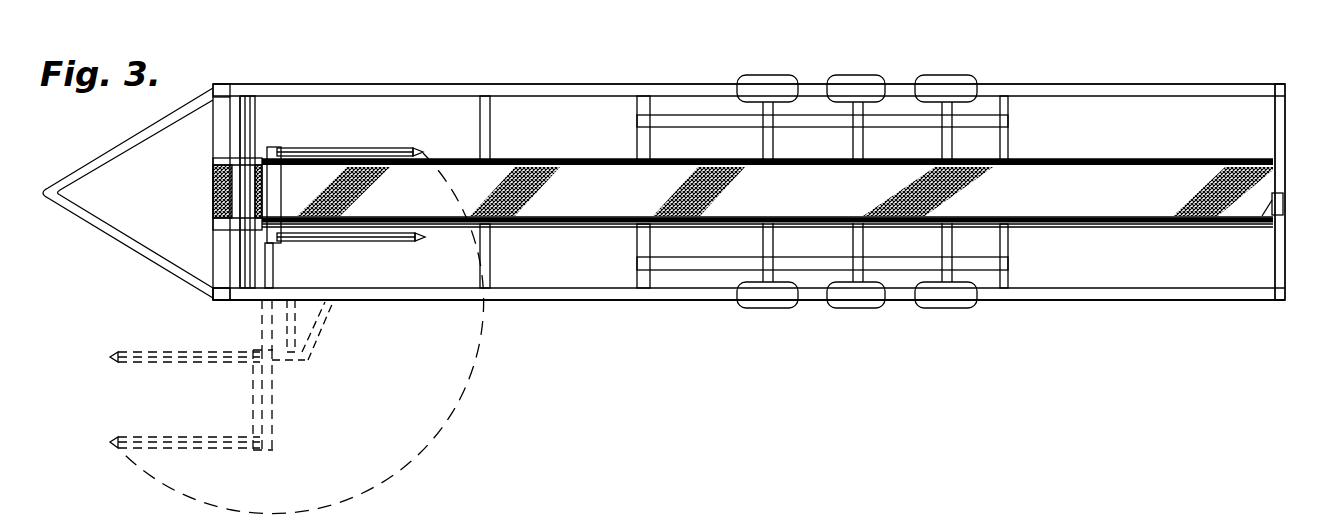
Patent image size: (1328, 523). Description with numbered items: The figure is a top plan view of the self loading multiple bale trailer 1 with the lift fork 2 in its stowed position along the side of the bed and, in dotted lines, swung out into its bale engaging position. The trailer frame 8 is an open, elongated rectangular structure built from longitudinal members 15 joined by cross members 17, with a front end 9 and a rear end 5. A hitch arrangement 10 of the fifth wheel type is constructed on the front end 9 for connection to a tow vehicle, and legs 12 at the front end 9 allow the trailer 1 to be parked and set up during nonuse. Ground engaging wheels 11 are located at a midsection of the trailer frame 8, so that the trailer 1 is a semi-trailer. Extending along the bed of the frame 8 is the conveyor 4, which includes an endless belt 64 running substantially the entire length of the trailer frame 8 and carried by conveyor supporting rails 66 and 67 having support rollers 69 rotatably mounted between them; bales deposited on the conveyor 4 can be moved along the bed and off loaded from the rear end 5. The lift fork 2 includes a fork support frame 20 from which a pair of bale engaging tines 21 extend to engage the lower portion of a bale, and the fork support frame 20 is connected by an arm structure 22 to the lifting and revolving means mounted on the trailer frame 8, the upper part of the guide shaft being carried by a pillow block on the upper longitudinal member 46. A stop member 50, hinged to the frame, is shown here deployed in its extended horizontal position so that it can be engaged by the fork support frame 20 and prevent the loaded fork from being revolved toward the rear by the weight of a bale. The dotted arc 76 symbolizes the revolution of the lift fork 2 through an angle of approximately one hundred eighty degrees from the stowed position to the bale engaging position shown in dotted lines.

The trailer 1 is at (694, 336).
The lift fork 2 is at (380, 148).
The conveyor 4 is at (211, 197).
The rear end 5 is at (1285, 272).
The trailer frame 8 is at (1169, 302).
The front end 9 is at (235, 116).
The hitch arrangement 10 is at (95, 226).
The ground engaging wheels 11 is at (775, 76).
The legs 12 is at (218, 303).
The longitudinal members 15 is at (368, 301).
The cross members 17 is at (490, 128).
The fork support frame 20 is at (282, 183).
The tines 21 is at (392, 242).
The arm structure 22 is at (274, 268).
The upper longitudinal member 46 is at (430, 301).
The stop member 50 is at (322, 342).
The endless belt 64 is at (1052, 215).
The conveyor supporting rail 66 is at (588, 160).
The conveyor supporting rail 67 is at (572, 230).
The support rollers 69 is at (553, 228).
The dotted arc 76 is at (468, 382).